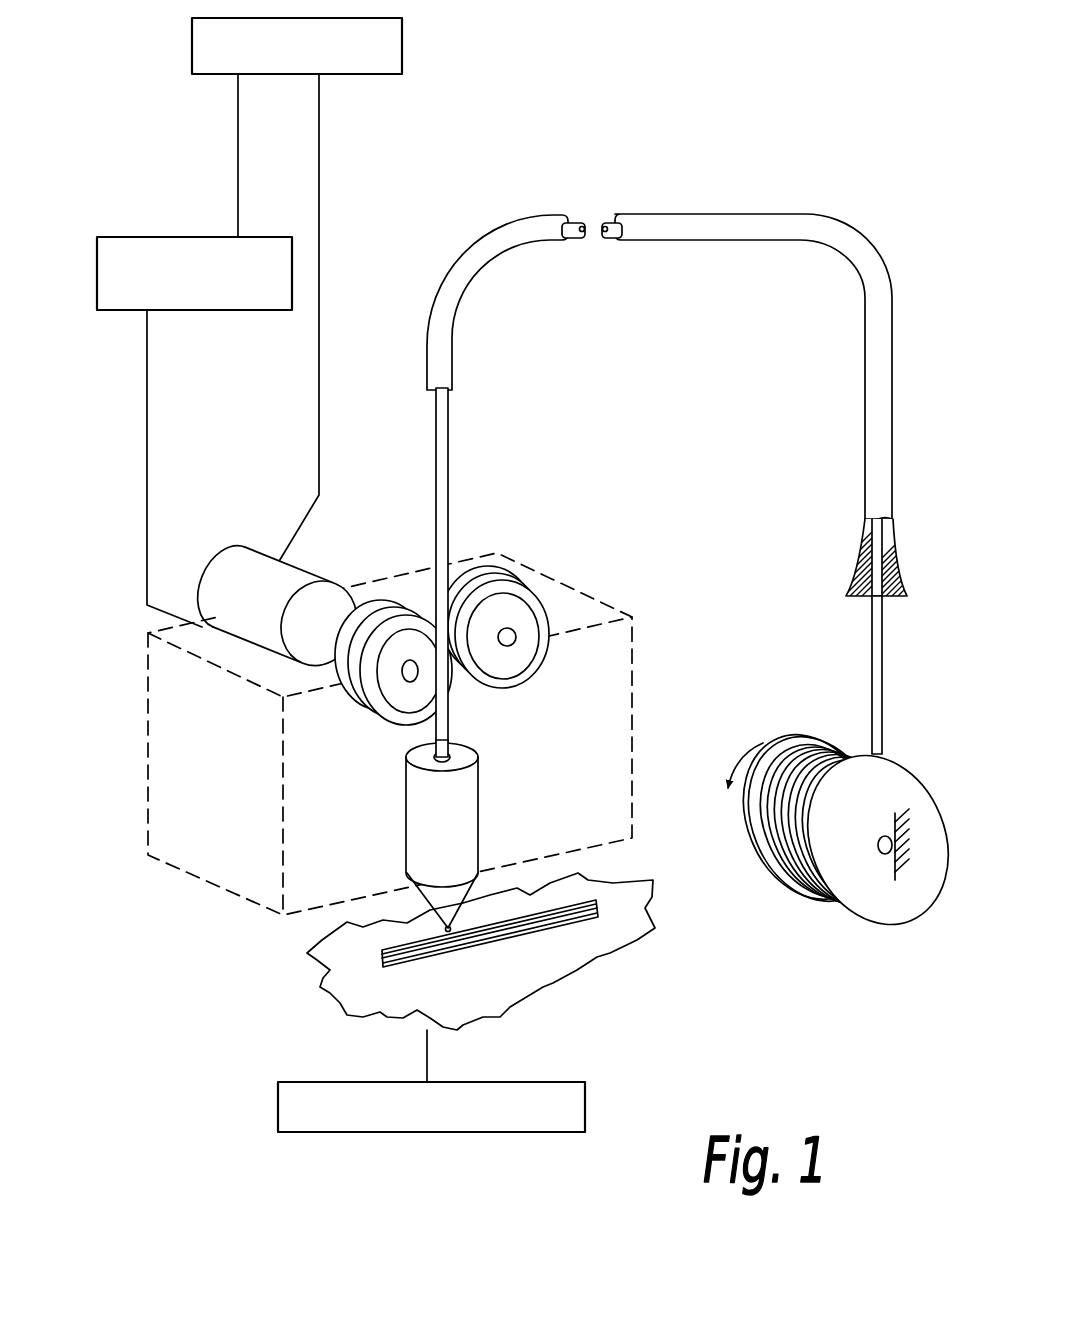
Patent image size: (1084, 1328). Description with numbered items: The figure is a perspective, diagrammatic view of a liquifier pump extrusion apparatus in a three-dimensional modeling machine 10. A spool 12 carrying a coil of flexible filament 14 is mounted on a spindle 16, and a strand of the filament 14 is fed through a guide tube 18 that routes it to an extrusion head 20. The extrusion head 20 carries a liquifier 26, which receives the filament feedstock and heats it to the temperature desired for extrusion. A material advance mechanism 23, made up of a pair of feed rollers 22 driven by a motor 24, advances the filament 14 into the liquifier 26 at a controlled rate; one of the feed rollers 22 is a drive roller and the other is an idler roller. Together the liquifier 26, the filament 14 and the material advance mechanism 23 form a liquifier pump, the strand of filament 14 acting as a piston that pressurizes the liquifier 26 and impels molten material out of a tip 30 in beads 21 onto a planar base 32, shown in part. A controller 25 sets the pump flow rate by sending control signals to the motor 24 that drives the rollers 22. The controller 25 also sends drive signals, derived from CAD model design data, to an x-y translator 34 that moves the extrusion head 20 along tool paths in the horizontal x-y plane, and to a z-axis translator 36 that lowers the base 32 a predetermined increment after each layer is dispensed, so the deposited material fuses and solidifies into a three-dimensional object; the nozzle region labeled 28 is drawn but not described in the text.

The three-dimensional modeling machine 10 is at (537, 188).
The spool 12 is at (855, 901).
The filament 14 is at (581, 222).
The spindle 16 is at (907, 863).
The guide tube 18 is at (547, 233).
The extrusion head 20 is at (240, 849).
The beads 21 is at (387, 964).
The feed rollers 22 is at (378, 704).
The material advance mechanism 23 is at (542, 591).
The motor 24 is at (233, 562).
The controller 25 is at (402, 37).
The liquifier 26 is at (460, 805).
The nozzle tip 28 is at (467, 893).
The tip 30 is at (443, 932).
The planar base 32 is at (500, 994).
The x-y translator 34 is at (175, 237).
The z-axis translator 36 is at (543, 1081).